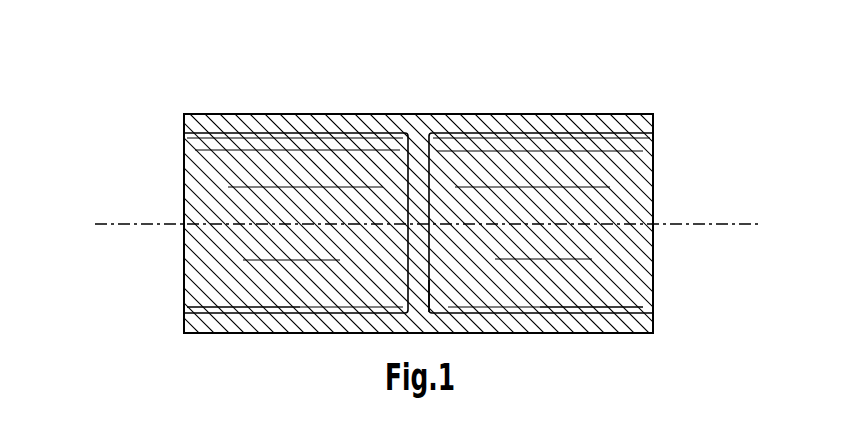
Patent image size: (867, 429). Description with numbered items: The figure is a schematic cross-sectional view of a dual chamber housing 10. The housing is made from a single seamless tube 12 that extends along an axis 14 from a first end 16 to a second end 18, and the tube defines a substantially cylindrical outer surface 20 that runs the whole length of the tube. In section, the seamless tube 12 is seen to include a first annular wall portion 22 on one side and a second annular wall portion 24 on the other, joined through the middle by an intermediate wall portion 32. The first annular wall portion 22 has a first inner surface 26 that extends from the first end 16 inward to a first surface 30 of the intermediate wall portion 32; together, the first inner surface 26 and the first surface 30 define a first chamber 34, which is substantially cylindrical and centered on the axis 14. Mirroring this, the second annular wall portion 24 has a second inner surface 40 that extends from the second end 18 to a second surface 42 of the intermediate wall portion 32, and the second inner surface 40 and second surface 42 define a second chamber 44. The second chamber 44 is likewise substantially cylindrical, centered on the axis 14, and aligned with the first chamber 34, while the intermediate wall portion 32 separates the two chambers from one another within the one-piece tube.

The dual chamber housing 10 is at (468, 88).
The seamless tube 12 is at (558, 114).
The axis 14 is at (705, 223).
The first end 16 is at (160, 128).
The second end 18 is at (692, 136).
The outer surface 20 is at (270, 114).
The first annular wall portion 22 is at (266, 333).
The second annular wall portion 24 is at (583, 334).
The first inner surface 26 is at (208, 312).
The first surface 30 is at (408, 197).
The intermediate wall portion 32 is at (430, 284).
The first chamber 34 is at (260, 215).
The second inner surface 40 is at (623, 312).
The second surface 42 is at (430, 173).
The second chamber 44 is at (565, 215).